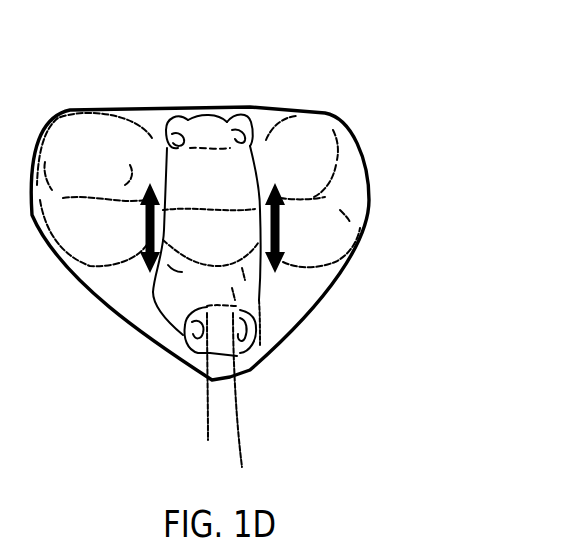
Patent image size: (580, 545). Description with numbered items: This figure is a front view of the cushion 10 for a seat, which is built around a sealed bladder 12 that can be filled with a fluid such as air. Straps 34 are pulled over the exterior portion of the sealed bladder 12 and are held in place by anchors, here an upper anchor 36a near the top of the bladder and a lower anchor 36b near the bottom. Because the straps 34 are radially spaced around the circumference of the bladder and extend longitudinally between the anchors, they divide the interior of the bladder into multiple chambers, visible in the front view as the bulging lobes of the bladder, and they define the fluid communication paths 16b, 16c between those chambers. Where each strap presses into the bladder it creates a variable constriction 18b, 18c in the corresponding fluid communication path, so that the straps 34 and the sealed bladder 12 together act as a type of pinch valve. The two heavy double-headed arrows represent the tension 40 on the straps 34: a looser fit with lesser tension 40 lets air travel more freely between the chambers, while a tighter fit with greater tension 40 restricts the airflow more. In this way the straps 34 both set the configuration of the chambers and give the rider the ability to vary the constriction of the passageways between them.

The cushion 10 is at (2, 96).
The sealed bladder 12 is at (55, 125).
The fluid communication path 16b is at (250, 148).
The fluid communication path 16c is at (166, 178).
The variable constriction 18b is at (262, 176).
The variable constriction 18c is at (167, 190).
The straps 34 is at (263, 279).
The upper anchor 36a is at (180, 113).
The lower anchor 36b is at (247, 355).
The tension 40 is at (147, 228).